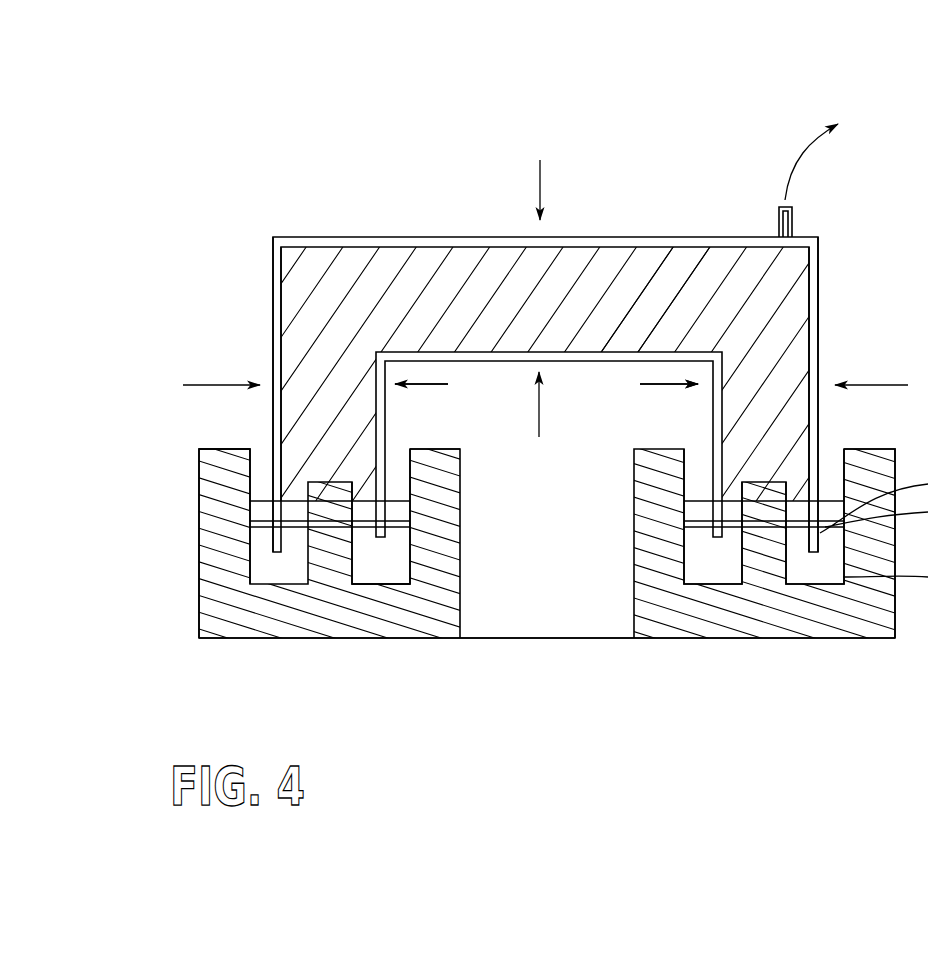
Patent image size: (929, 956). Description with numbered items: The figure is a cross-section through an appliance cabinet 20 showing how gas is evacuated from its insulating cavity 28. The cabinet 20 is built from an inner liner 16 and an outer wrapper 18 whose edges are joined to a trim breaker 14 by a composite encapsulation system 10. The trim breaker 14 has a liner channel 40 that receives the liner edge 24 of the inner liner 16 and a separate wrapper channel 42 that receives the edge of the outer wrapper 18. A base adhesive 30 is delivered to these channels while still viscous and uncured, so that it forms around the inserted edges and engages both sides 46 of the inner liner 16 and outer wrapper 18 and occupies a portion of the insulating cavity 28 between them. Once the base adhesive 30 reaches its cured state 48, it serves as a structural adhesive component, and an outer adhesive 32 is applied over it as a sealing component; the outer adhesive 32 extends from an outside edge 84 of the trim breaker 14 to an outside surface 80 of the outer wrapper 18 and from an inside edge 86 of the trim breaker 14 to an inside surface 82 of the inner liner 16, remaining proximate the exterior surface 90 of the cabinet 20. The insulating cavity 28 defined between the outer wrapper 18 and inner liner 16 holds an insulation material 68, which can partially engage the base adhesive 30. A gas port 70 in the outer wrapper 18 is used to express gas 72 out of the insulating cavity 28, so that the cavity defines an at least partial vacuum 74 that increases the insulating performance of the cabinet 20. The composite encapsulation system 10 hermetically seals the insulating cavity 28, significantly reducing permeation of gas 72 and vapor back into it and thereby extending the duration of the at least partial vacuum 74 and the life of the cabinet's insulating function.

The composite encapsulation system 10 is at (165, 475).
The trim breaker 14 is at (195, 620).
The inner liner 16 is at (723, 372).
The outer wrapper 18 is at (818, 282).
The structural cabinet 20 is at (225, 222).
The liner edge 24 is at (720, 542).
The insulating cavity 28 is at (362, 273).
The base adhesive 30 is at (370, 560).
The outer adhesive 32 is at (265, 507).
The liner channel 40 is at (379, 586).
The wrapper channel 42 is at (812, 588).
The both sides 46 is at (407, 519).
The cured state 48 is at (245, 556).
The insulation material 68 is at (693, 282).
The gas port 70 is at (793, 222).
The gas 72 is at (795, 165).
The at least partial vacuum 74 is at (298, 298).
The outside surface 80 is at (272, 352).
The inside surface 82 is at (387, 418).
The outside edge 84 is at (215, 449).
The inside edge 86 is at (433, 449).
The exterior surface 90 is at (818, 302).